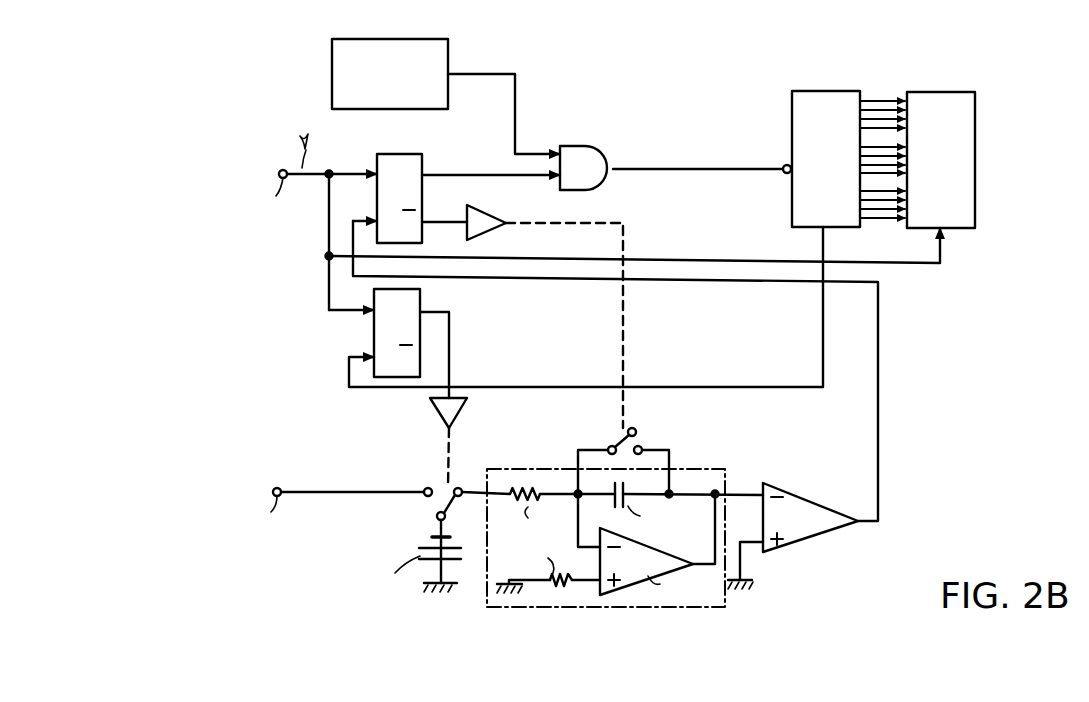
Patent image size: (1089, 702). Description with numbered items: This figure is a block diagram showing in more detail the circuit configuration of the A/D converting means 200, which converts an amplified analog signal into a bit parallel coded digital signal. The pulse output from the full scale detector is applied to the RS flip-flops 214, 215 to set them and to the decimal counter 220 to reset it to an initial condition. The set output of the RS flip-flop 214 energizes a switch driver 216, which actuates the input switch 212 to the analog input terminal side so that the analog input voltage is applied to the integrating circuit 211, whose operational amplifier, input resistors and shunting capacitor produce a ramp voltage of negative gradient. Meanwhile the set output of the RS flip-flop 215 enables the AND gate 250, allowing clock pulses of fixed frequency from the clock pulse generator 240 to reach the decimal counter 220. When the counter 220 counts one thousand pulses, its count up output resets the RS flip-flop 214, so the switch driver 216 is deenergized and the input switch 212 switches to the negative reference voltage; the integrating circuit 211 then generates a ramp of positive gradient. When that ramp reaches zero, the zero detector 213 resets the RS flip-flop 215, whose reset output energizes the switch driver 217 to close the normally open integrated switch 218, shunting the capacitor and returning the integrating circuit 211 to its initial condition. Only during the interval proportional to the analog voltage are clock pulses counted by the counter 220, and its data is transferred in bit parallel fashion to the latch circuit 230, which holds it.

The A/D converting means 200 is at (1036, 337).
The integrating circuit 211 is at (697, 606).
The input switch 212 is at (430, 506).
The zero detector 213 is at (805, 537).
The RS flip-flop 214 is at (420, 295).
The RS flip-flop 215 is at (413, 154).
The switch driver 216 is at (462, 408).
The switch driver 217 is at (489, 232).
The integrated switch 218 is at (645, 441).
The decimal counter 220 is at (828, 92).
The latch circuit 230 is at (949, 95).
The clock pulse generator 240 is at (446, 54).
The AND gate 250 is at (594, 189).